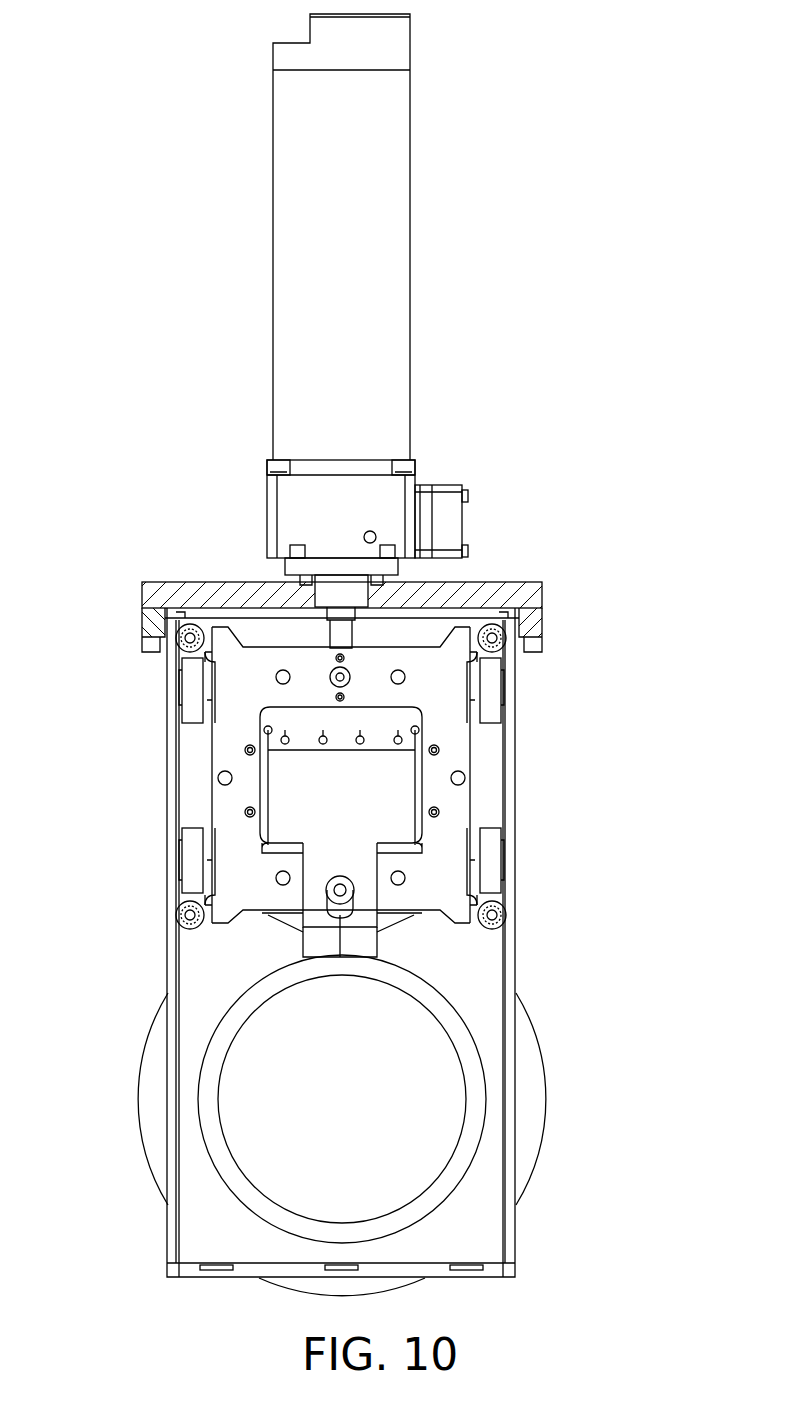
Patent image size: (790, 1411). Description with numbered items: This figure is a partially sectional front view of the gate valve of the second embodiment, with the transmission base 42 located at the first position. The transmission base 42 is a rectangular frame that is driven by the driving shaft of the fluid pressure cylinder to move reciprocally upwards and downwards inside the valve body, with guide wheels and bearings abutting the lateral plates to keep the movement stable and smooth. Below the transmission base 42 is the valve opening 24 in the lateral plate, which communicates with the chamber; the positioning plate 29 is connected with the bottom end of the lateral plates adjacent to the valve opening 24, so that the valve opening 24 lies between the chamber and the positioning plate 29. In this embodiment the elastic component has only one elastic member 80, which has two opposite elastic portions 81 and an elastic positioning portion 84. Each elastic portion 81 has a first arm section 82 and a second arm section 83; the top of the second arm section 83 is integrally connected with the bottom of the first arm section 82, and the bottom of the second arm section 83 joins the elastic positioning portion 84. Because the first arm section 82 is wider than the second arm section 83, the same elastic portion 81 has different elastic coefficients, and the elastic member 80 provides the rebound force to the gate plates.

The valve opening 24 is at (413, 1102).
The positioning plate 29 is at (488, 1272).
The transmission base 42 is at (225, 730).
The elastic member 80 is at (478, 843).
The elastic portion 81 is at (451, 817).
The first arm section 82 is at (400, 808).
The second arm section 83 is at (355, 870).
The elastic positioning portion 84 is at (355, 945).